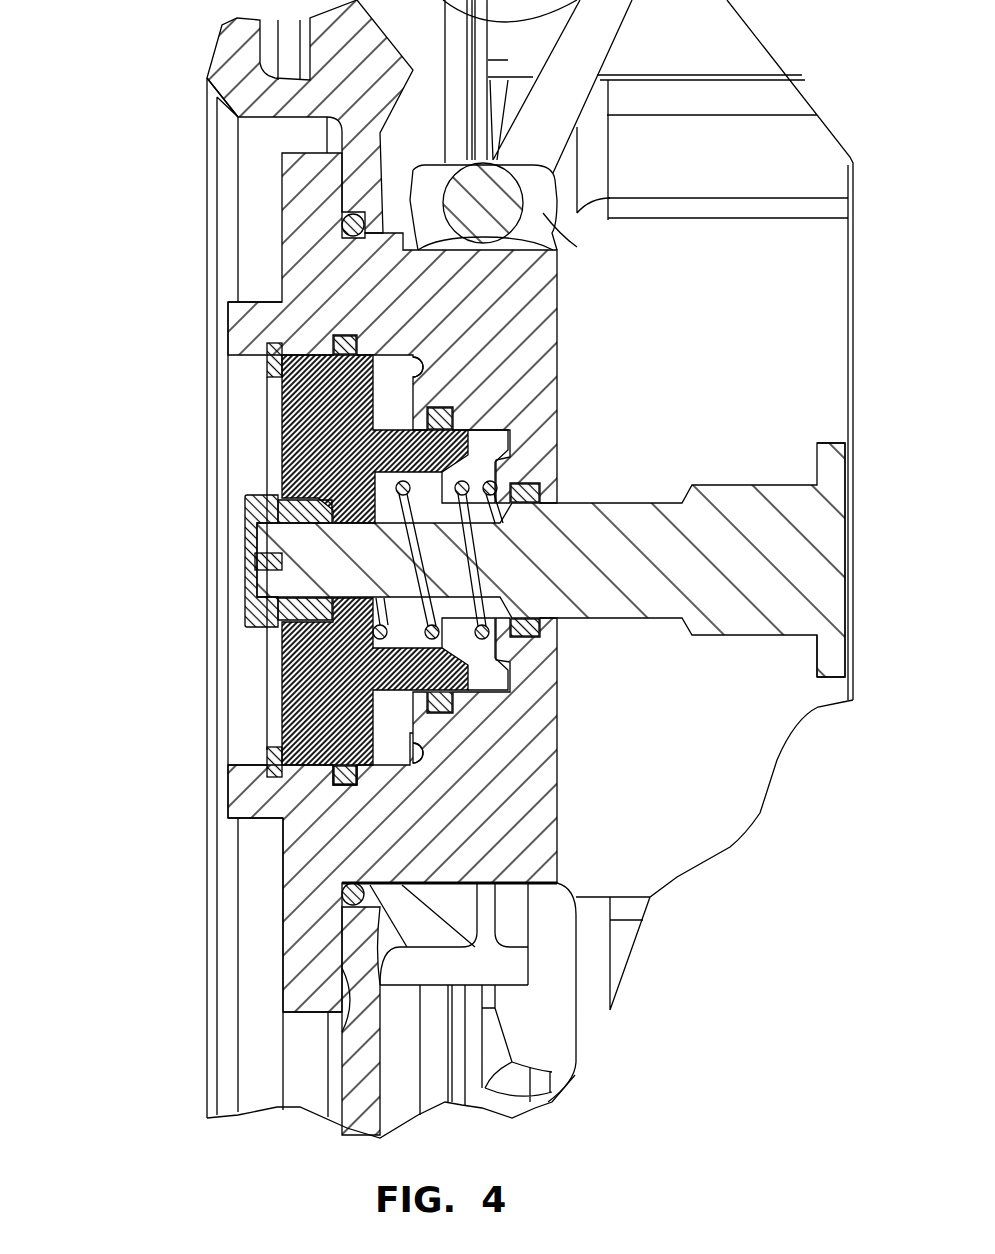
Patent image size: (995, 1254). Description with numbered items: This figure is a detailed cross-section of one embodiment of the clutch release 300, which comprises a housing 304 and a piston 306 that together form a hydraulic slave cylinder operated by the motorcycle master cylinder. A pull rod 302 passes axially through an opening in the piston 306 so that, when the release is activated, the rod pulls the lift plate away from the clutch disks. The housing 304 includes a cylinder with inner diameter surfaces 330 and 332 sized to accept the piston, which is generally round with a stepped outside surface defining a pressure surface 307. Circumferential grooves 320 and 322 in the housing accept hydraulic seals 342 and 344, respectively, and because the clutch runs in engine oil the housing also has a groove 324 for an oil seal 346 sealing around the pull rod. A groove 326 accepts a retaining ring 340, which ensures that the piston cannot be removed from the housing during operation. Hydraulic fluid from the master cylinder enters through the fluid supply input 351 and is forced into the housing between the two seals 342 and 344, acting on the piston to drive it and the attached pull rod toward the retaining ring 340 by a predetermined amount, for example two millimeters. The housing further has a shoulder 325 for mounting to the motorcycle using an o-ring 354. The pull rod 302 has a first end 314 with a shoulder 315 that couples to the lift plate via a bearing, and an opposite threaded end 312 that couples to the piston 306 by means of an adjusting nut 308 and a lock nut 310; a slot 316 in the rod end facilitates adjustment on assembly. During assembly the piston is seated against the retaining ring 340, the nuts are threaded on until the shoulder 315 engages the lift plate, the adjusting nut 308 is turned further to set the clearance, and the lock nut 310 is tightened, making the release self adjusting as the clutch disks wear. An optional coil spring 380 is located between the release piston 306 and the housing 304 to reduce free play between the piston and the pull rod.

The clutch release 300 is at (133, 772).
The pull rod 302 is at (633, 607).
The housing 304 is at (387, 303).
The piston 306 is at (350, 696).
The pressure surface 307 is at (398, 750).
The adjusting nut 308 is at (282, 623).
The lock nut 310 is at (243, 500).
The threaded end 312 is at (253, 542).
The first end 314 is at (837, 582).
The shoulder 315 is at (833, 677).
The slot 316 is at (247, 562).
The circumferential groove 320 is at (330, 787).
The circumferential groove 322 is at (430, 407).
The groove 324 is at (512, 455).
The shoulder 325 is at (357, 1000).
The groove 326 is at (257, 797).
The inner diameter surface 330 is at (407, 350).
The inner diameter surface 332 is at (493, 683).
The retaining ring 340 is at (267, 750).
The hydraulic seal 342 is at (373, 770).
The hydraulic seal 344 is at (450, 715).
The oil seal 346 is at (537, 483).
The fluid supply input 351 is at (540, 218).
The o-ring 354 is at (363, 882).
The coil spring 380 is at (412, 513).